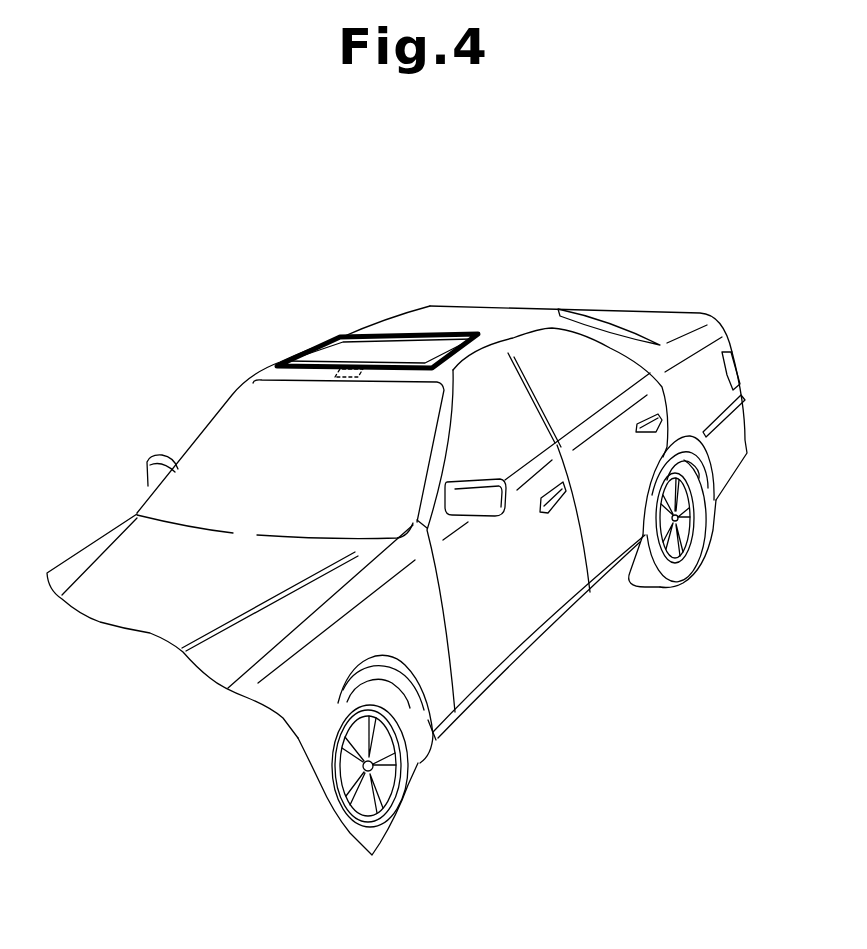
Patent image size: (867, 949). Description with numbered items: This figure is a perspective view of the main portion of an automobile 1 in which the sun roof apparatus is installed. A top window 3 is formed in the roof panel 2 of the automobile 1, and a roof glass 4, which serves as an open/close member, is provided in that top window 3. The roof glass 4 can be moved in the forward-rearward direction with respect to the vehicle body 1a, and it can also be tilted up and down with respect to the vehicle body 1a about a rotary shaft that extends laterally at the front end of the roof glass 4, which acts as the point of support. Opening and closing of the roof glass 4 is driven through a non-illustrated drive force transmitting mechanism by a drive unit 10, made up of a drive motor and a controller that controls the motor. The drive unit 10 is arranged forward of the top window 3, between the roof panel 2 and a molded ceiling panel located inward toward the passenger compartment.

The automobile 1 is at (528, 623).
The vehicle body 1a is at (505, 307).
The roof panel 2 is at (453, 318).
The top window 3 is at (371, 330).
The roof glass 4 is at (327, 353).
The drive unit 10 is at (343, 379).